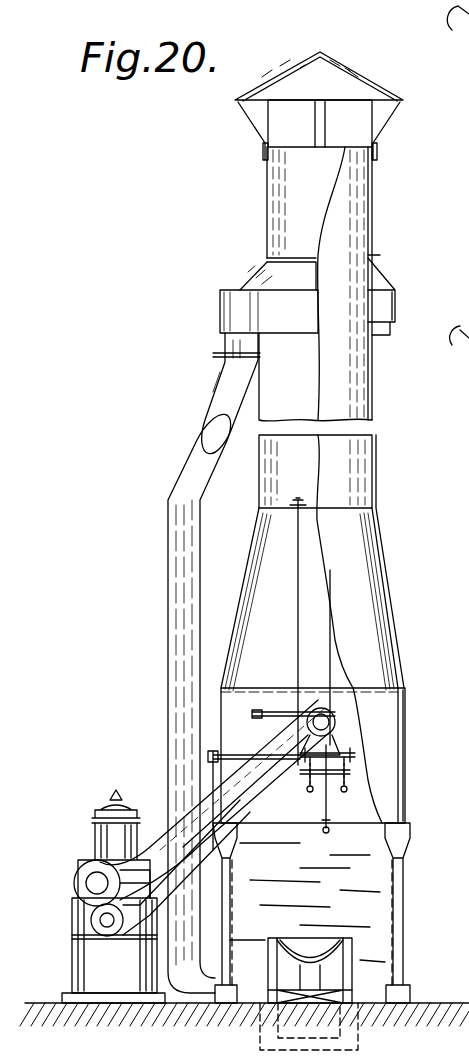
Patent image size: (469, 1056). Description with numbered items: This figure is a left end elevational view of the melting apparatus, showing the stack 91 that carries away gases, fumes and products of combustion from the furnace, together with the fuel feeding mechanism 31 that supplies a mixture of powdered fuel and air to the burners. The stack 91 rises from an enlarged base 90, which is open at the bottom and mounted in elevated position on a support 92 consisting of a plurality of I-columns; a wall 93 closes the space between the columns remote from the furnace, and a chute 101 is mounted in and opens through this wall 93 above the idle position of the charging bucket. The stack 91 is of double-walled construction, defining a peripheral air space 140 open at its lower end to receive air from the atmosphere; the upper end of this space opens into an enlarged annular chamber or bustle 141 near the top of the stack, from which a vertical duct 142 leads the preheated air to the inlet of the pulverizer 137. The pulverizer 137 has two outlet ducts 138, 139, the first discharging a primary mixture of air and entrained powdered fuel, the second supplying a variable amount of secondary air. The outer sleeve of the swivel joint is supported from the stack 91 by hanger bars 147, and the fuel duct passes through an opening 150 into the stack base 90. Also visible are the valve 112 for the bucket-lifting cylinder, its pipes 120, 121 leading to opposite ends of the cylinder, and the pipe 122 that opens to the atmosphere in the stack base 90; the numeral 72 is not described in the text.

The fuel feeding mechanism 31 is at (70, 893).
The conveyor 72 is at (468, 143).
The enlarged base of the stack 90 is at (407, 742).
The stack 91 is at (378, 464).
The support 92 is at (395, 888).
The wall 93 is at (380, 867).
The chute 101 is at (330, 967).
The valve 112 is at (329, 789).
The pipe 120 is at (240, 752).
The pipe 121 is at (367, 743).
The pipe 122 is at (322, 812).
The pulverizer 137 is at (82, 949).
The outlet duct 138 is at (127, 922).
The outlet duct 139 is at (130, 873).
The peripheral air space 140 is at (397, 658).
The annular chamber or bustle 141 is at (385, 302).
The vertical duct 142 is at (178, 660).
The hanger bars 147 is at (330, 648).
The opening 150 is at (297, 752).